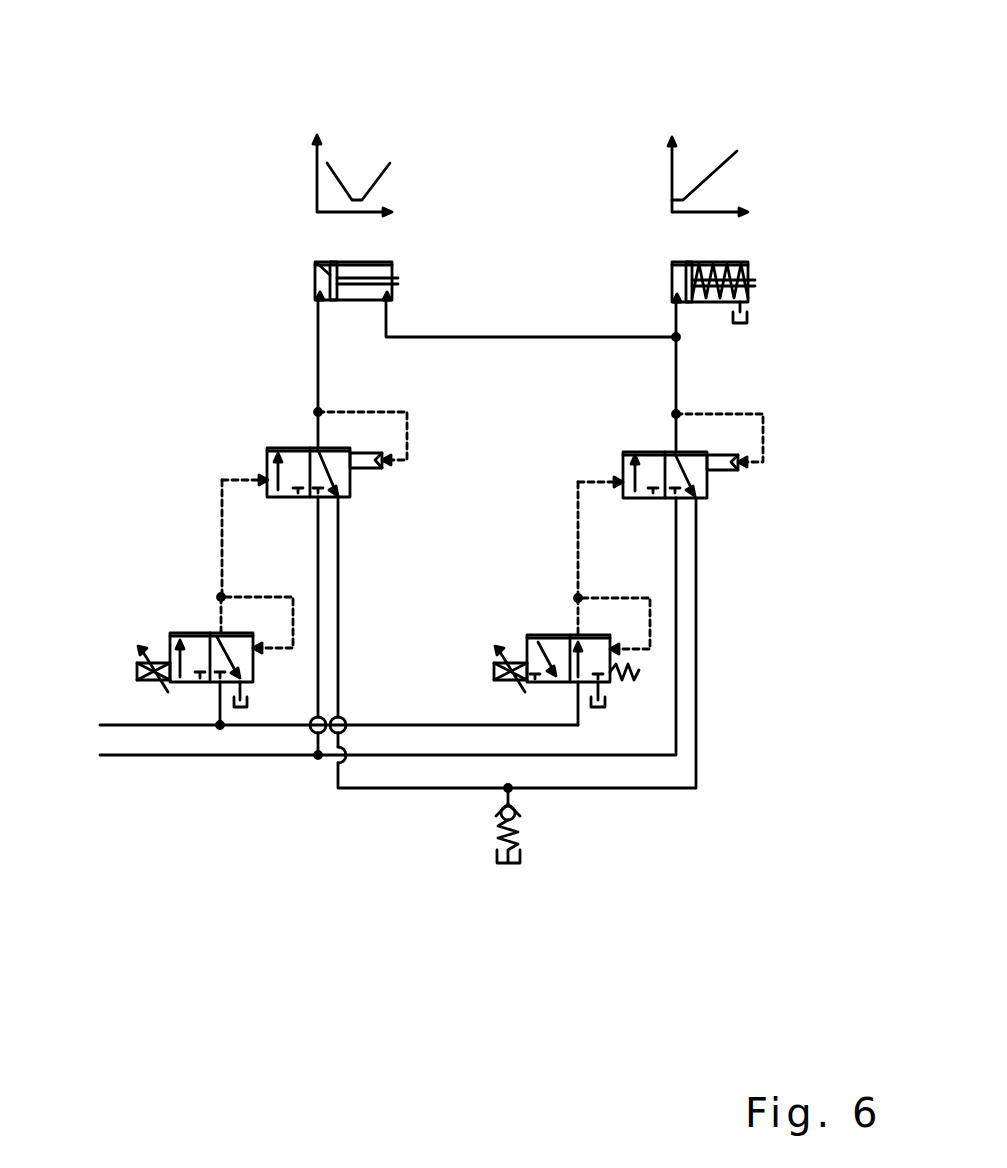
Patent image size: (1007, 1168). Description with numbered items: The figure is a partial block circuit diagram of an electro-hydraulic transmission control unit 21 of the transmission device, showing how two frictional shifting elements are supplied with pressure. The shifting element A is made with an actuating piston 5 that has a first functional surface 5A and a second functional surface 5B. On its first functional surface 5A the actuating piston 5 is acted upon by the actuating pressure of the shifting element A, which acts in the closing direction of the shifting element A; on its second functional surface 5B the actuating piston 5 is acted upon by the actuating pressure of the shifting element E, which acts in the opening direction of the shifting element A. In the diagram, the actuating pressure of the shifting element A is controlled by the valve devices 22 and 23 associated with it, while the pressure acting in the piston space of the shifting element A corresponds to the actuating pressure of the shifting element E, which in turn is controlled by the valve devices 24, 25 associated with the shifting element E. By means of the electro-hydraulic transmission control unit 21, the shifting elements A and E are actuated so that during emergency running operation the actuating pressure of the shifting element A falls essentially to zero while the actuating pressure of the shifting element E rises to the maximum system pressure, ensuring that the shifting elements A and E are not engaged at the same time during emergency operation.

The actuating piston 5 is at (318, 263).
The first functional surface 5A is at (332, 282).
The second functional surface 5B is at (357, 262).
The frictional shifting element A is at (407, 250).
The shifting element E is at (764, 249).
The electro-hydraulic transmission control unit 21 is at (232, 410).
The valve device 22 is at (197, 646).
The valve device 23 is at (268, 465).
The valve device 24 is at (597, 657).
The valve device 25 is at (695, 475).